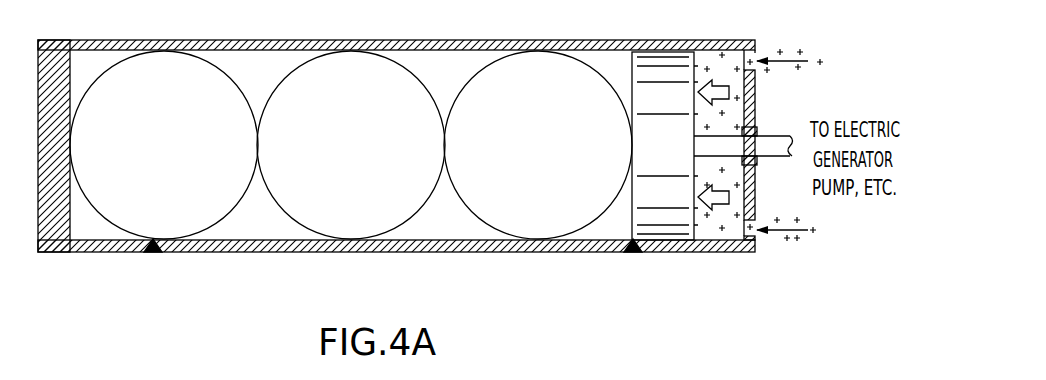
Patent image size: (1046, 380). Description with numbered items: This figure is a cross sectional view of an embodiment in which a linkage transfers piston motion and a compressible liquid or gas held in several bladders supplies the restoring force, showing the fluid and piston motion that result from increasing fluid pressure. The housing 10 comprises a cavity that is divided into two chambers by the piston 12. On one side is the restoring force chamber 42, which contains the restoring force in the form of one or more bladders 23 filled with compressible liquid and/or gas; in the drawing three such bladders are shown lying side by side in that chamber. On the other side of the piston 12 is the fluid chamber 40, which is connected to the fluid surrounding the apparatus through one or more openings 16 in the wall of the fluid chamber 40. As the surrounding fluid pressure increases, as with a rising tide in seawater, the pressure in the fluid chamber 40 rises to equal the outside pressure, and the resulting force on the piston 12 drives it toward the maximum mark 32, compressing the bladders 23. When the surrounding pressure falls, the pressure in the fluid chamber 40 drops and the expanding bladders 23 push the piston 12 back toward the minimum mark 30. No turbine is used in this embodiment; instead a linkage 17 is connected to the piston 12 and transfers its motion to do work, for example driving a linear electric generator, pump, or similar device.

The housing 10 is at (456, 40).
The piston 12 is at (664, 52).
The openings 16 is at (756, 60).
The linkage 17 is at (779, 136).
The bladders 23 is at (202, 212).
The minimum mark 30 is at (637, 256).
The maximum mark 32 is at (150, 255).
The fluid chamber 40 is at (715, 234).
The restoring force chamber 42 is at (102, 60).